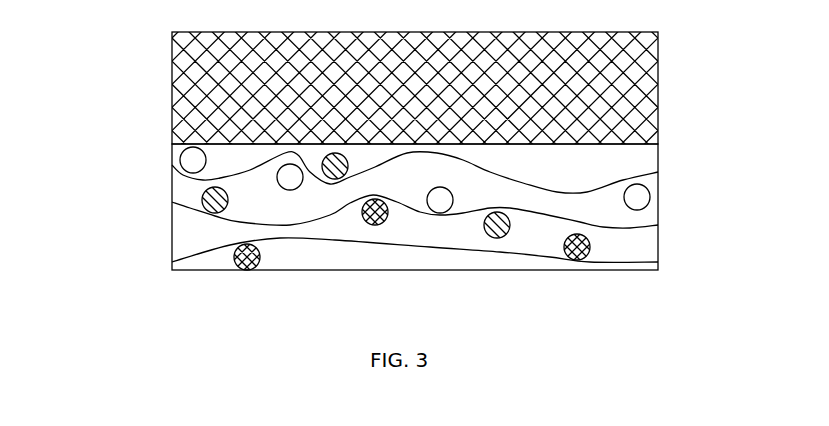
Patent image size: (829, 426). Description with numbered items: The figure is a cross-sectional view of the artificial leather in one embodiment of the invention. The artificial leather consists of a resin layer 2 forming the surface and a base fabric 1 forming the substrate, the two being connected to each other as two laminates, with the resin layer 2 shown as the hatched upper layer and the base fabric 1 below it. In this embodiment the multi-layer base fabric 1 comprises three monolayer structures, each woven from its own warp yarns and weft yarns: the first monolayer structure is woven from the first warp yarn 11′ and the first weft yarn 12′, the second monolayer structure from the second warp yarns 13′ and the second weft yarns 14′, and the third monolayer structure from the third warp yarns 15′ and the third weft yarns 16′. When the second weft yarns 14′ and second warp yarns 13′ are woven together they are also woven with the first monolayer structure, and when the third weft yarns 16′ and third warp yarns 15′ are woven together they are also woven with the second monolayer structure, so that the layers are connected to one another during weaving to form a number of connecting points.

The base fabric 1 is at (150, 222).
The resin layer 2 is at (150, 102).
The first warp yarn 11′ is at (587, 192).
The first weft yarn 12′ is at (650, 195).
The second warp yarn 13′ is at (610, 227).
The second weft yarn 14′ is at (331, 176).
The third warp yarn 15′ is at (533, 257).
The third weft yarn 16′ is at (250, 262).